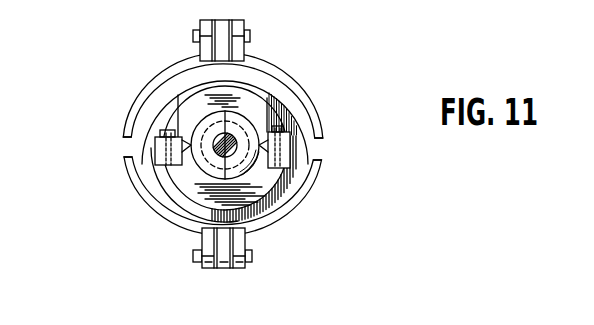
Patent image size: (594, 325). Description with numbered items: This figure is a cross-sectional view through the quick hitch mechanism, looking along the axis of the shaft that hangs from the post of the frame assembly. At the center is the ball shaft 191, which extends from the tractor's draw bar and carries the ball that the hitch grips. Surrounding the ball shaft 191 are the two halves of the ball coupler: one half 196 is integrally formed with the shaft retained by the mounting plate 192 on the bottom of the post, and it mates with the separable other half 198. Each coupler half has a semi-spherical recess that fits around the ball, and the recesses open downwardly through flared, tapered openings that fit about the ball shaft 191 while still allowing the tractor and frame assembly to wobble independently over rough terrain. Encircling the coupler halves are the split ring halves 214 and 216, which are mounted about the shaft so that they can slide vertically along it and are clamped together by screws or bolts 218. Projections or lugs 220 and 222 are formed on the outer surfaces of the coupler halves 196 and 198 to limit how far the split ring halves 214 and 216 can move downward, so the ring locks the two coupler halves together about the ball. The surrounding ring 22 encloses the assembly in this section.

The clamp ring 22 is at (135, 188).
The ball shaft 191 is at (232, 152).
The mounting plate 192 is at (180, 210).
The ball coupler half 196 is at (208, 120).
The separable other half of ball coupler 198 is at (240, 112).
The split ring half 214 is at (273, 105).
The split ring half 216 is at (273, 175).
The screws or bolts 218 is at (162, 128).
The projection or lug 220 is at (130, 165).
The projection or lug 222 is at (300, 156).